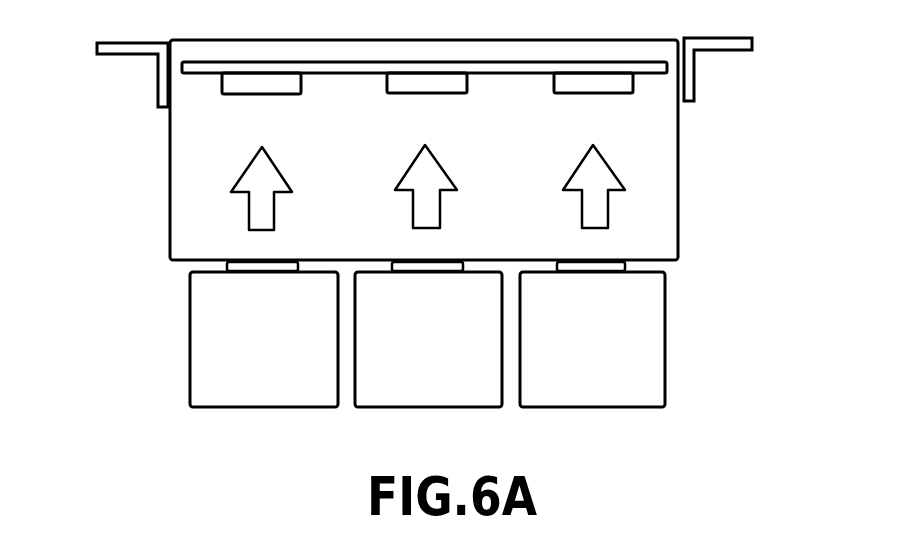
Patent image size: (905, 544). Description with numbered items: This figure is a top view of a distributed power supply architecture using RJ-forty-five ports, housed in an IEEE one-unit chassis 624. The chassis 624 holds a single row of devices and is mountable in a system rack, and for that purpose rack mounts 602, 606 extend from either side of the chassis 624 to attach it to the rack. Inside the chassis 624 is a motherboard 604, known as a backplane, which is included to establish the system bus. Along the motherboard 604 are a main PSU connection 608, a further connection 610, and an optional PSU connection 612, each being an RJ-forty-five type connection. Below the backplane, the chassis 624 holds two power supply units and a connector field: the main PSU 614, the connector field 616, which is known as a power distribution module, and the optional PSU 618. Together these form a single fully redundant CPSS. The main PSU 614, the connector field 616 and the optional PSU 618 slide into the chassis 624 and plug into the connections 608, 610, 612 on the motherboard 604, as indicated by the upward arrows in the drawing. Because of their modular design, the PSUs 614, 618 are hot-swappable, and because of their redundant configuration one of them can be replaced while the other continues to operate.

The rack mount 602 is at (107, 42).
The motherboard 604 is at (259, 50).
The rack mount 606 is at (732, 38).
The main PSU RJ-45 connection 608 is at (243, 95).
The RJ-45 connection 610 is at (415, 95).
The optional PSU RJ-45 connection 612 is at (583, 95).
The main PSU 614 is at (213, 408).
The RJ-45 connector field 616 is at (380, 408).
The optional PSU 618 is at (553, 408).
The 1U chassis 624 is at (170, 158).